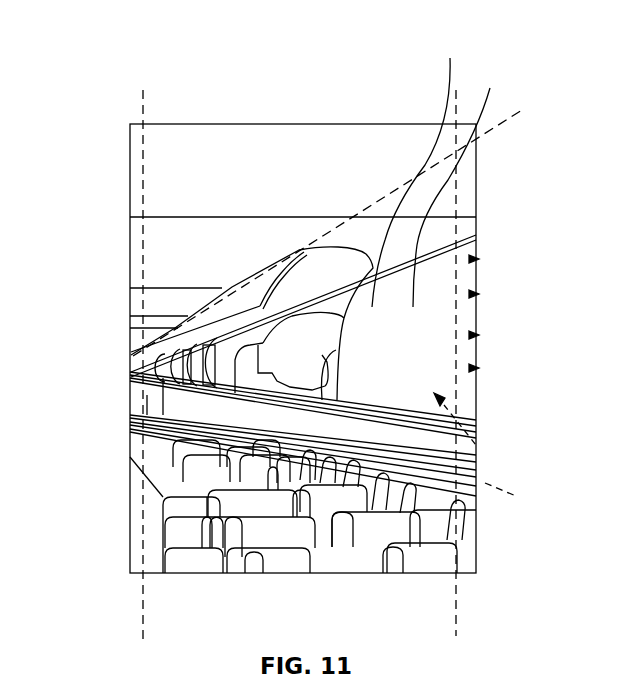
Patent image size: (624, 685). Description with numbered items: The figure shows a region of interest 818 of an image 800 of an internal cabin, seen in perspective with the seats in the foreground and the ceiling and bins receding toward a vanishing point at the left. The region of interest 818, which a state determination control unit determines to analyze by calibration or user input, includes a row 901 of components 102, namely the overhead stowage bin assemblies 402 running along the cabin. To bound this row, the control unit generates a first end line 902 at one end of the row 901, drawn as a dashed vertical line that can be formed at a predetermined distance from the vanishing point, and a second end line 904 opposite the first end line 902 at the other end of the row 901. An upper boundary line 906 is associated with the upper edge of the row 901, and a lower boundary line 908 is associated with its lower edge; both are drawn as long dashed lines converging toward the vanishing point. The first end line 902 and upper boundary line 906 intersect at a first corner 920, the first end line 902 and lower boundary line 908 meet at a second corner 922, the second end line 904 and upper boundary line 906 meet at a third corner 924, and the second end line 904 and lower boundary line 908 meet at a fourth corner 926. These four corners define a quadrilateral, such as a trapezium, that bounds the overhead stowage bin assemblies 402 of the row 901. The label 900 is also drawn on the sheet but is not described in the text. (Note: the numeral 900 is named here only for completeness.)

The components 102 is at (457, 410).
The overhead stowage bin assemblies 402 is at (421, 170).
The image 800 is at (479, 368).
The region of interest 818 is at (479, 259).
The head-mounted display view 900 is at (479, 335).
The row 901 is at (479, 294).
The first end line 902 is at (143, 163).
The second end line 904 is at (462, 385).
The upper boundary line 906 is at (308, 250).
The lower boundary line 908 is at (400, 510).
The first corner 920 is at (131, 352).
The second corner 922 is at (131, 385).
The third corner 924 is at (462, 186).
The fourth corner 926 is at (463, 471).